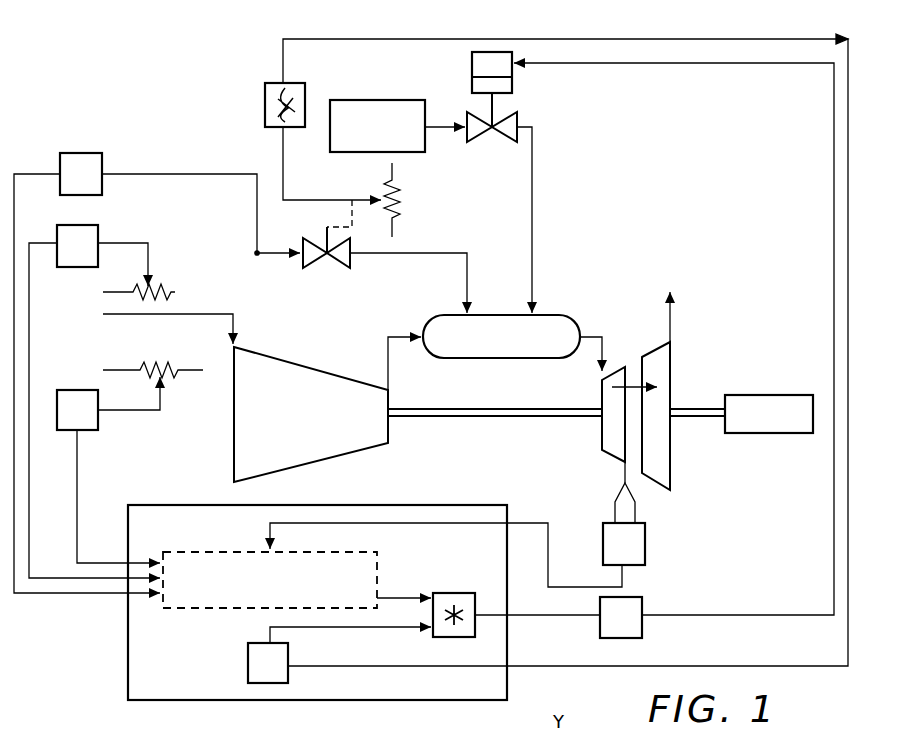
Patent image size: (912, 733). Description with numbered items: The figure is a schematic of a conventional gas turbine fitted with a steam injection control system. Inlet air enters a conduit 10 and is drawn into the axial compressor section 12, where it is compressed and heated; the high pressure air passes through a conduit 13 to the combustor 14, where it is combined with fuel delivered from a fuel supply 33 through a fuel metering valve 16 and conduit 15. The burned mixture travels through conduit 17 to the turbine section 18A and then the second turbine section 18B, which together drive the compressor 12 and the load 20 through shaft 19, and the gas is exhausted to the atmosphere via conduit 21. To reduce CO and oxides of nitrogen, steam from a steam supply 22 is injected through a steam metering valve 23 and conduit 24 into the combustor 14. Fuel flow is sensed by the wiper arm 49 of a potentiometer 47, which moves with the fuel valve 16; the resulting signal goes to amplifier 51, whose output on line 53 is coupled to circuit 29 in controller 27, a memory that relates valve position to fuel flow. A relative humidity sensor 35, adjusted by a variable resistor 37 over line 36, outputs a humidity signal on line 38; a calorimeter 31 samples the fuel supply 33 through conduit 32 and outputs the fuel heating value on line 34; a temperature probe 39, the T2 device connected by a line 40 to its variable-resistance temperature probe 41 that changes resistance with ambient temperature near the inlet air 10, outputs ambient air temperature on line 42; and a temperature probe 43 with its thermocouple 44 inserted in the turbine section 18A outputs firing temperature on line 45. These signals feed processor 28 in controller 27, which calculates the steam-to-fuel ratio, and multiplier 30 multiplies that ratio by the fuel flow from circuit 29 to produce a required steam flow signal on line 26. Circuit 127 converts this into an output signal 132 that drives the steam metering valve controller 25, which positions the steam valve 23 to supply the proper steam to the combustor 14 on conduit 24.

The conduit 10 is at (148, 316).
The axial compressor section 12 is at (308, 367).
The conduit 13 is at (385, 357).
The combustor 14 is at (492, 315).
The conduit 15 is at (445, 254).
The fuel metering valve 16 is at (328, 260).
The conduit 17 is at (602, 340).
The turbine section 18A is at (600, 435).
The turbine section 18B is at (660, 450).
The shaft 19 is at (692, 409).
The load 20 is at (756, 395).
The conduit 21 is at (672, 320).
The steam supply 22 is at (398, 100).
The steam metering valve 23 is at (497, 142).
The conduit 24 is at (532, 250).
The steam metering valve controller 25 is at (512, 84).
The line 26 is at (575, 616).
The controller 27 is at (392, 505).
The processor 28 is at (214, 552).
The circuit 29 is at (248, 662).
The multiplier 30 is at (455, 593).
The calorimeter 31 is at (85, 153).
The conduit 32 is at (178, 174).
The fuel supply 33 is at (267, 252).
The line 34 is at (32, 173).
The relative humidity sensor 35 is at (73, 226).
The line 36 is at (124, 243).
The variable resistor 37 is at (172, 293).
The line 38 is at (30, 522).
The temperature probe 39 is at (98, 426).
The T2 signal line 40 is at (160, 404).
The temperature probe 41 is at (165, 368).
The line 42 is at (77, 462).
The temperature probe 43 is at (645, 550).
The thermocouple 44 is at (620, 494).
The line 45 is at (550, 540).
The potentiometer 47 is at (402, 195).
The wiper arm 49 is at (340, 201).
The amplifier 51 is at (265, 103).
The line 53 is at (366, 40).
The circuit 127 is at (625, 638).
The output signal 132 is at (718, 63).